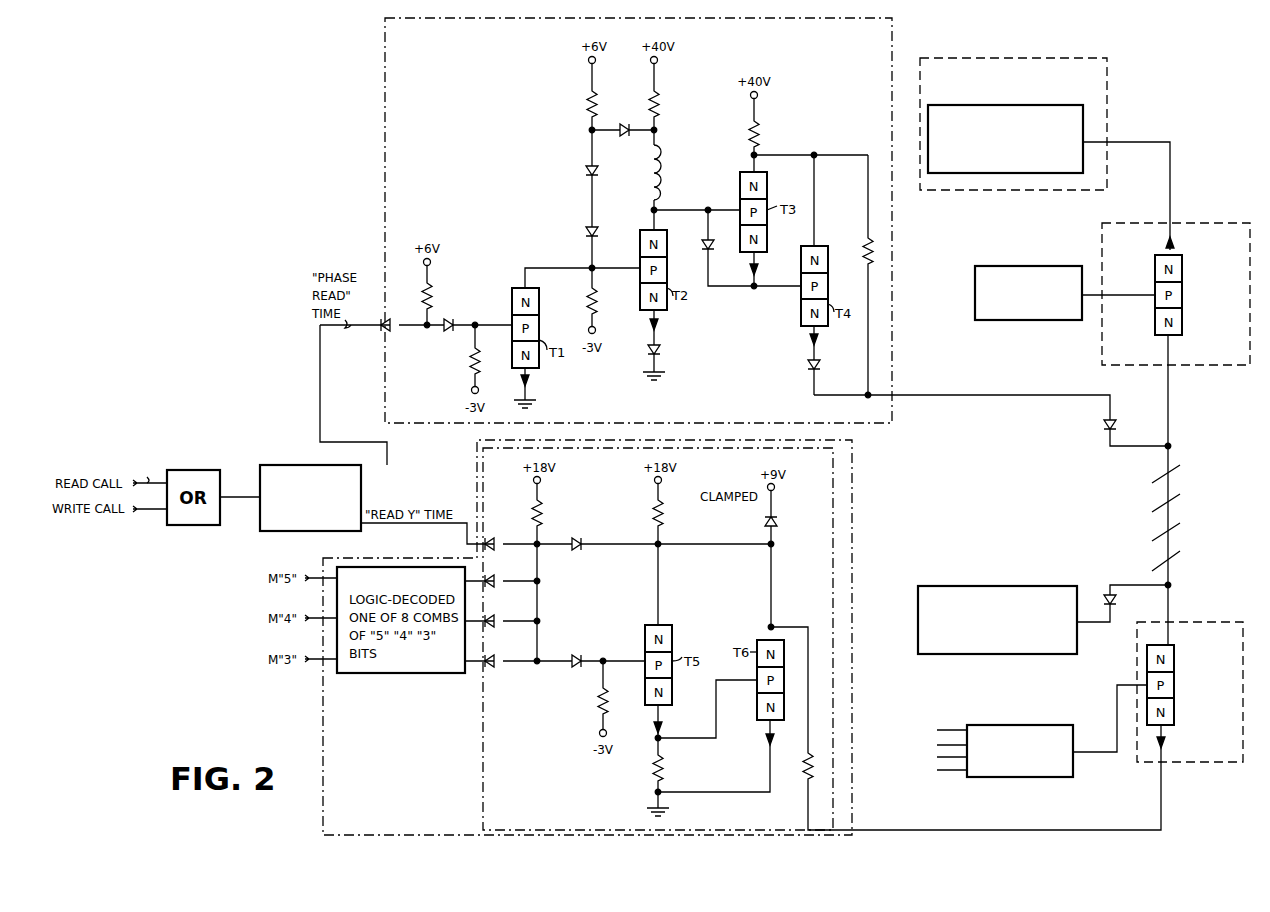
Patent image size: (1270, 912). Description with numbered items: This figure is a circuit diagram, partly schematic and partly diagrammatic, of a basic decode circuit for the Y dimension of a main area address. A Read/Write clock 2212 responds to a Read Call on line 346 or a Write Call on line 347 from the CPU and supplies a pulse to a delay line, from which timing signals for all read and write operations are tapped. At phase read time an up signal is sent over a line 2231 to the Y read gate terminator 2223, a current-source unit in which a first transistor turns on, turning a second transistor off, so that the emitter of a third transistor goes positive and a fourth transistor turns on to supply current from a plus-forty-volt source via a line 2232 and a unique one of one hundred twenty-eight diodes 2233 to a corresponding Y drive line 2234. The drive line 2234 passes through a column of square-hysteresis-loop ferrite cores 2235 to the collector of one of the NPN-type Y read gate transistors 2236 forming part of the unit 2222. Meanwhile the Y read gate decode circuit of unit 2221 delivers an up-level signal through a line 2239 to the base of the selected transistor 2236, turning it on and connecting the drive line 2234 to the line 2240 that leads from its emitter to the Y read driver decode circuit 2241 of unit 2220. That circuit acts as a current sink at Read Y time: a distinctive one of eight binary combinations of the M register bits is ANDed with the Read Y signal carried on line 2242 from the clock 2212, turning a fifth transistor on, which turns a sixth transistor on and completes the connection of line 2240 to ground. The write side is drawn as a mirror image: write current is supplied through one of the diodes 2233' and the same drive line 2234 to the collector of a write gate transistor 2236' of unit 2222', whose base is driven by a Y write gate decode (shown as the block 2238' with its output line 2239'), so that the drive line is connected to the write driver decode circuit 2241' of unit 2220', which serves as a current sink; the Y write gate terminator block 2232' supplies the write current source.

The Read Call line 346 is at (149, 478).
The Write Call line 347 is at (148, 514).
The Read/Write clock 2212 is at (310, 498).
The Y read gate terminator 2223 is at (384, 114).
The phase read line 2231 is at (318, 377).
The Read Y line 2242 is at (472, 534).
The Y read driver decode unit 2220 is at (587, 637).
The Y read driver decode circuit 2241 is at (690, 639).
The line 2240 is at (926, 830).
The line 2232 is at (991, 419).
The diode 2233 is at (1081, 426).
The Y drive line 2234 is at (1170, 489).
The ferrite cores 2235 is at (1170, 528).
The Y write gate terminator (current source) 2232' is at (997, 609).
The diode 2233' is at (1122, 593).
The Y read gate transistor 2236 is at (1186, 691).
The line 2239 is at (1110, 718).
The Y read gate decode unit 2221 is at (996, 724).
The Y read gate unit 2222 is at (1190, 706).
The Y write gate unit 2222' is at (1176, 309).
The write driver decode circuit 2241' is at (1006, 129).
The Y write driver decode unit 2220' is at (1013, 137).
The Y write gate decode 2238' is at (1034, 282).
The Y write gate decode output line 2239' is at (1118, 285).
The write gate transistor 2236' is at (1147, 305).